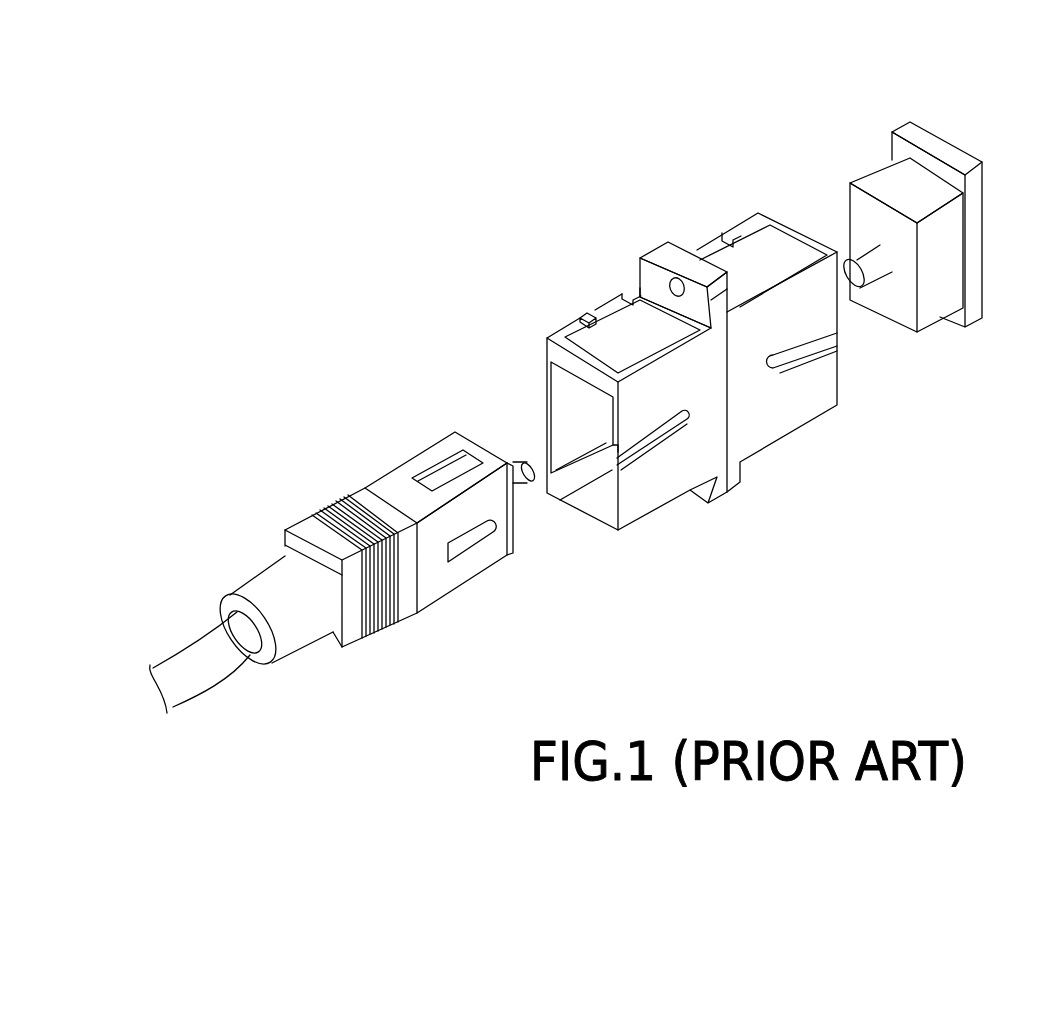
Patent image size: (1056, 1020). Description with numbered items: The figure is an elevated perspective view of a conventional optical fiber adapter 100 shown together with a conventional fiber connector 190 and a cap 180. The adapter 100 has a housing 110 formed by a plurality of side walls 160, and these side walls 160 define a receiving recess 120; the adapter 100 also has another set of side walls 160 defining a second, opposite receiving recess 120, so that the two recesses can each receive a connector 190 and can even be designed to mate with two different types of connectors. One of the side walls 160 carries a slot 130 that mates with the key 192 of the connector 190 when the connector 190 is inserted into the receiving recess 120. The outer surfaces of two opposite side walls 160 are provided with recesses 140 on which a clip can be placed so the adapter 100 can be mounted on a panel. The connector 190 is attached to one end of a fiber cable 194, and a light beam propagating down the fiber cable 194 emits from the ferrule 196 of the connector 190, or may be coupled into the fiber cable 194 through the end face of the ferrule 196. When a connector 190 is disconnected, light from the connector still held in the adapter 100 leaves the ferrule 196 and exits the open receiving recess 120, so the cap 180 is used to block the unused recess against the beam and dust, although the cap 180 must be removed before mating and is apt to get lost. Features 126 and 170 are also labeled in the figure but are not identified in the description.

The fiber adapter 100 is at (605, 170).
The housing 110 is at (543, 317).
The receiving recess 120 is at (600, 460).
The adapter front opening 126 is at (550, 350).
The slot 130 is at (807, 343).
The recess 140 is at (733, 255).
The side wall 160 is at (548, 420).
The mounting flange 170 is at (600, 301).
The cap 180 is at (967, 150).
The fiber connector 190 is at (318, 468).
The key 192 is at (470, 545).
The fiber cable 194 is at (210, 650).
The ferrule 196 is at (525, 458).